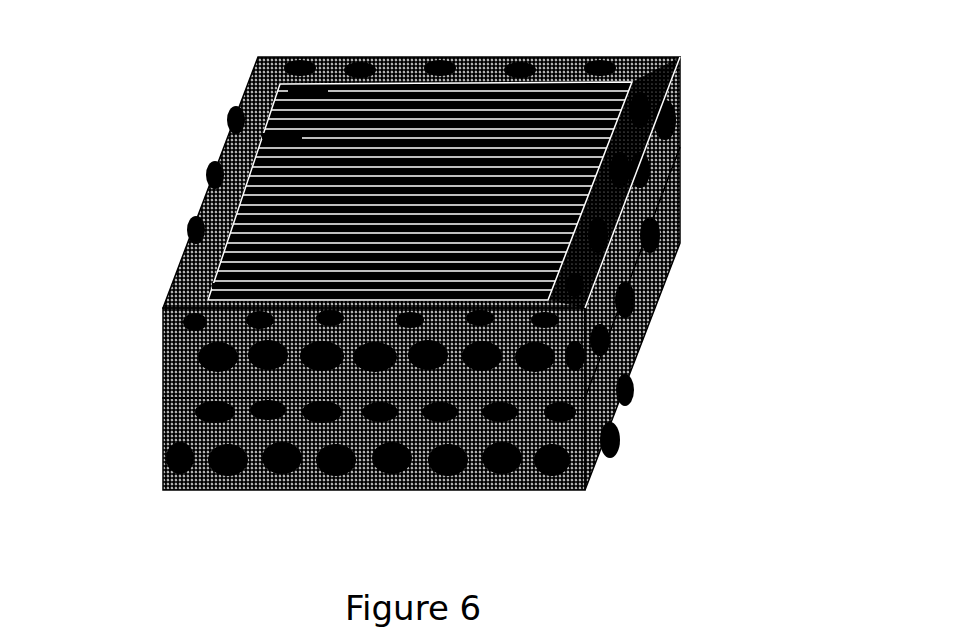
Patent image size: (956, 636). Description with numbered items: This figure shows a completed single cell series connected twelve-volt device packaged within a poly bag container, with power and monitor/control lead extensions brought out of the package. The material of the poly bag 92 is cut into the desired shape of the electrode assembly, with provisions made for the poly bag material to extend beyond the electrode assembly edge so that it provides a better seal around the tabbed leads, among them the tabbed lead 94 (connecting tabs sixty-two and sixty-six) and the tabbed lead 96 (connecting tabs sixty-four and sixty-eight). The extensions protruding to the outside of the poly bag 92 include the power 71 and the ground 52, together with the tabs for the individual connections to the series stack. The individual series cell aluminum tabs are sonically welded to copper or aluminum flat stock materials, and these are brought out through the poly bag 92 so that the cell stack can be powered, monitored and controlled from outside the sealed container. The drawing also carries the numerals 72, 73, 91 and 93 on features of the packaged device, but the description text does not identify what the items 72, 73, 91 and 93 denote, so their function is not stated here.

The ground 52 is at (186, 254).
The power 71 is at (293, 90).
The second electrode 72 is at (268, 137).
The third electrode 73 is at (213, 284).
The electrode array 91 is at (527, 82).
The poly bag 92 is at (567, 485).
The upper layer 93 is at (163, 398).
The tabbed lead 94 is at (250, 99).
The tabbed lead 96 is at (215, 171).